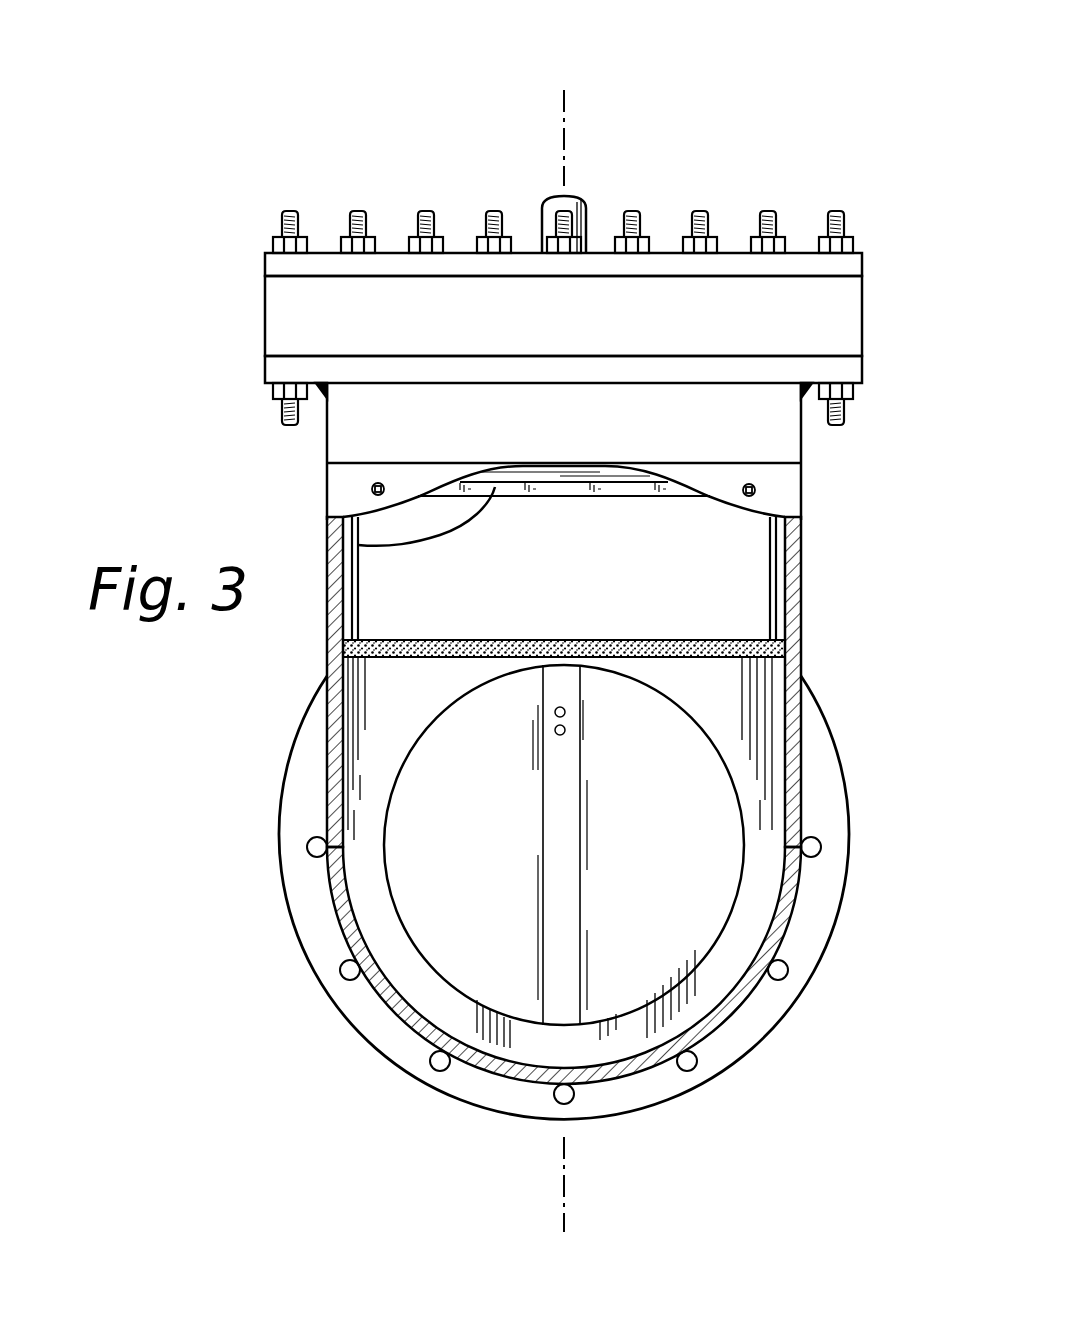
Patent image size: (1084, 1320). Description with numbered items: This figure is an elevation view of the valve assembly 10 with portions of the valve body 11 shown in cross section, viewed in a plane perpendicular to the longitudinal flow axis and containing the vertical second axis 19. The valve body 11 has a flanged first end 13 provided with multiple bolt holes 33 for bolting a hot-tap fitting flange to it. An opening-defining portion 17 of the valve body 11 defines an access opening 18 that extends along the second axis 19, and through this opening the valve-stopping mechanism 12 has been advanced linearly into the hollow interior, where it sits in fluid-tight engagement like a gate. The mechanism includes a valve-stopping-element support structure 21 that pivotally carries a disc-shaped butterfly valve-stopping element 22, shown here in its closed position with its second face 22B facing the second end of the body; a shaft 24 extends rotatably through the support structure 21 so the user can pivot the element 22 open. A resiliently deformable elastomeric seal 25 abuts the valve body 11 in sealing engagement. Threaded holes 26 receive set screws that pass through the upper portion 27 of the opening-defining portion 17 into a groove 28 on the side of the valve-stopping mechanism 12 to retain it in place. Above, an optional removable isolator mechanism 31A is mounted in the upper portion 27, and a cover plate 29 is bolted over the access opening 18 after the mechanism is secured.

The valve assembly 10 is at (218, 108).
The valve body 11 is at (503, 1078).
The valve-stopping mechanism 12 is at (540, 195).
The first end 13 is at (295, 737).
The opening-defining portion 17 is at (326, 585).
The access opening 18 is at (350, 625).
The second axis 19 is at (564, 103).
The valve-stopping-element support structure 21 is at (735, 685).
The valve-stopping element 22 is at (693, 800).
The second face 22B is at (617, 983).
The shaft 24 is at (585, 206).
The elastomeric seal 25 is at (731, 640).
The threaded holes 26 is at (372, 488).
The upper portion 27 is at (263, 368).
The groove 28 is at (352, 545).
The cover plate 29 is at (271, 262).
The isolator mechanism 31A is at (862, 318).
The bolt holes 33 is at (340, 963).